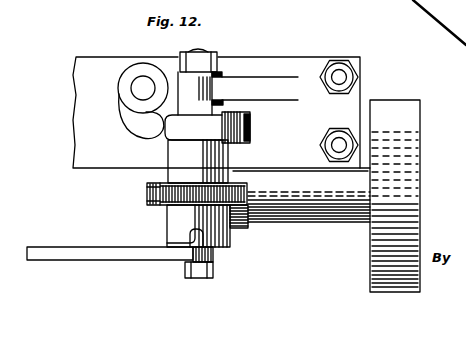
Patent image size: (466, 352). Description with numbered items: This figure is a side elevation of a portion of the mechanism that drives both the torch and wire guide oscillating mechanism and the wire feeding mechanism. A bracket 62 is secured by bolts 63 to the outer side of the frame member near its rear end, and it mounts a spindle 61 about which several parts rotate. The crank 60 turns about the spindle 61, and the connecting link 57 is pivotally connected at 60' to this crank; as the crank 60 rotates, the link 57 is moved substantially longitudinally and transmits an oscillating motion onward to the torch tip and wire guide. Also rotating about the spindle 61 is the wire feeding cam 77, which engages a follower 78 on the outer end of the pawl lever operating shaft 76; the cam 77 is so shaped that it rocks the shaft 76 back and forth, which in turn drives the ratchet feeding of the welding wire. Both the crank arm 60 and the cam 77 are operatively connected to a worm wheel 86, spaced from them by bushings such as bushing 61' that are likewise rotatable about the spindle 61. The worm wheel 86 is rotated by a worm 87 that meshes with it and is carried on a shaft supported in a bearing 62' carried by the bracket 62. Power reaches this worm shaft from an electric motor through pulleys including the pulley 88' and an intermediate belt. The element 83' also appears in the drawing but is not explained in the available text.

The connecting link 57 is at (107, 253).
The crank 60 is at (213, 236).
The pivotal connection 60' is at (201, 271).
The spindle 61 is at (212, 73).
The bushing 61' is at (181, 161).
The bracket 62 is at (221, 102).
The bearing 62' is at (309, 220).
The bolts 63 is at (347, 78).
The pawl lever operating shaft 76 is at (135, 87).
The cam 77 is at (252, 127).
The follower 78 is at (128, 117).
The rod 83' is at (434, 22).
The worm wheel 86 is at (149, 198).
The worm 87 is at (148, 194).
The pulley 88' is at (411, 196).